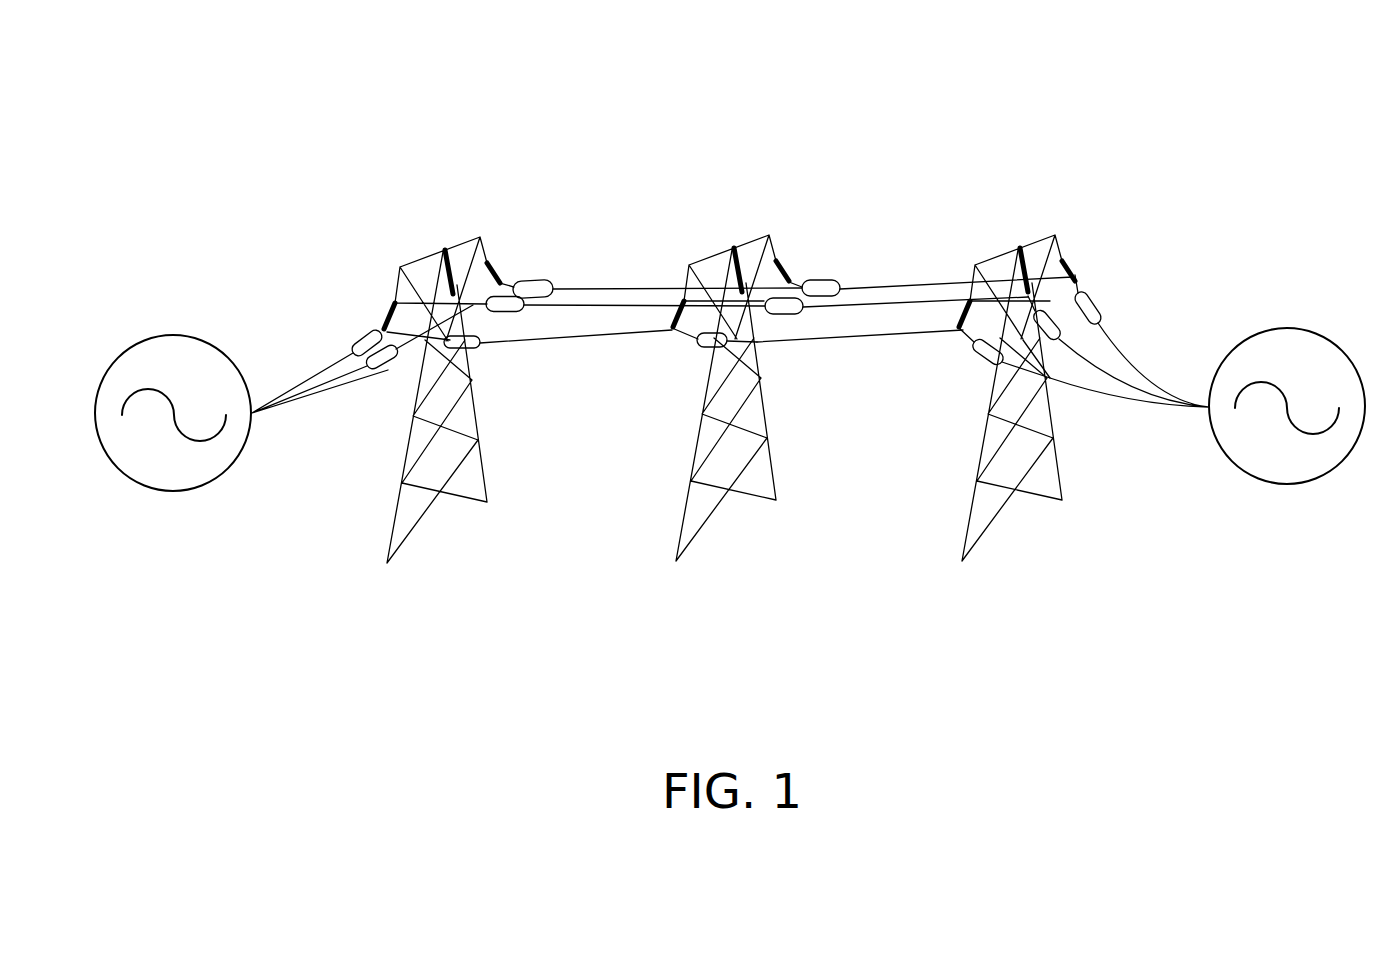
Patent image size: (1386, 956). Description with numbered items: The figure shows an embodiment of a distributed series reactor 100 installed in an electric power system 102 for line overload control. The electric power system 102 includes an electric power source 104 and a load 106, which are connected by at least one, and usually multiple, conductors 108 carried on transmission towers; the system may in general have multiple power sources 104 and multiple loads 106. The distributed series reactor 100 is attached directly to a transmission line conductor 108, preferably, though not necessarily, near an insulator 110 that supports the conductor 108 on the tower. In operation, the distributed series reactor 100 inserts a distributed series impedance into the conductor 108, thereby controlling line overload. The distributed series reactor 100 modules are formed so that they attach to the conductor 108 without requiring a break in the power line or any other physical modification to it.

The distributed series reactor 100 is at (533, 280).
The electric power system 102 is at (807, 122).
The electric power source 104 is at (173, 336).
The load 106 is at (1287, 329).
The conductor 108 is at (878, 283).
The insulator 110 is at (389, 327).